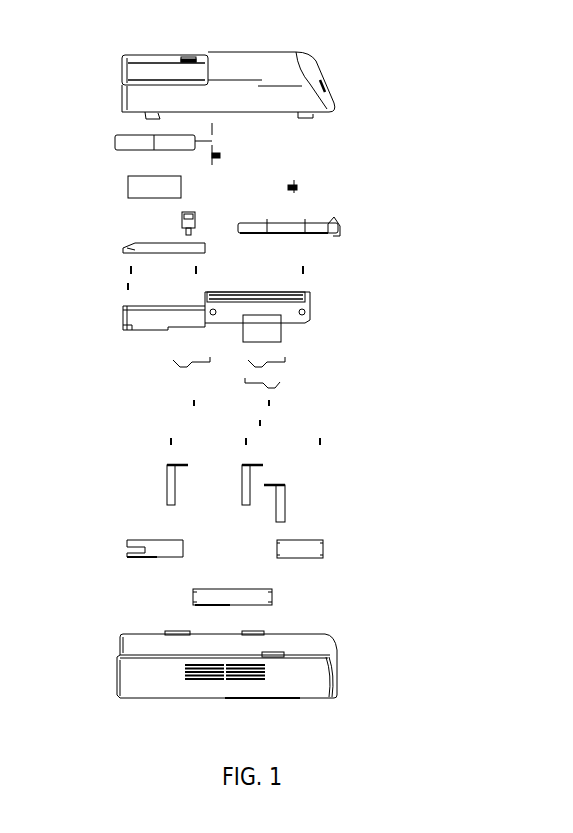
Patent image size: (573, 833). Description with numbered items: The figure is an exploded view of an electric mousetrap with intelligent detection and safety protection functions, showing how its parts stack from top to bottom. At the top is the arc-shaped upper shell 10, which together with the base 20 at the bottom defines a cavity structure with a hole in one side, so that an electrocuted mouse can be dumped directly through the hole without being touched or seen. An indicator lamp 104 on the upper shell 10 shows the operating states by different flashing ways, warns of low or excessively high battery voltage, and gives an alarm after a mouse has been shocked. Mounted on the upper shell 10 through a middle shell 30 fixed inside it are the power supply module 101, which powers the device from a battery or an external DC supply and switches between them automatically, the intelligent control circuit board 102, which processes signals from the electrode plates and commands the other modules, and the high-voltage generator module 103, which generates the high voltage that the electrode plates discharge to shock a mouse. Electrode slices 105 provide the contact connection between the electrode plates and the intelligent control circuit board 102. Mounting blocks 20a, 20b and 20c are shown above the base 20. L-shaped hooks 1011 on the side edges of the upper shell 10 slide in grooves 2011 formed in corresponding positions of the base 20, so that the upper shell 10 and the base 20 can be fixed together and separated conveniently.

The upper shell 10 is at (318, 108).
The indicator lamp 104 is at (150, 58).
The L-shaped hooks 1011 is at (312, 117).
The power supply module 101 is at (195, 222).
The high-voltage generator module 103 is at (140, 190).
The intelligent control circuit board 102 is at (135, 250).
The middle shell 30 is at (142, 320).
The electrode slices 105 is at (284, 496).
The mounting block 20c is at (157, 550).
The mounting block 20a is at (307, 550).
The mounting block 20b is at (262, 600).
The grooves 2011 is at (305, 652).
The base 20 is at (318, 695).